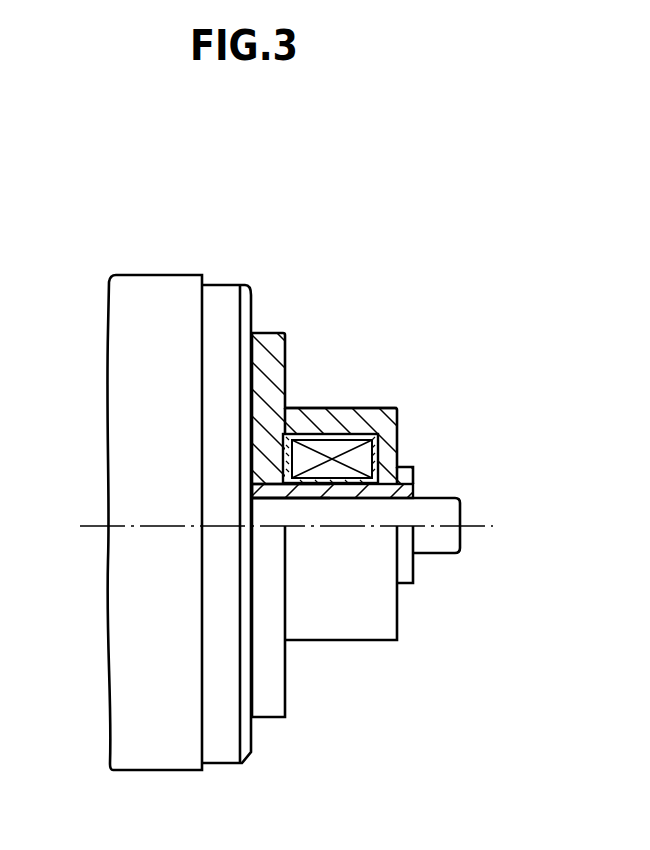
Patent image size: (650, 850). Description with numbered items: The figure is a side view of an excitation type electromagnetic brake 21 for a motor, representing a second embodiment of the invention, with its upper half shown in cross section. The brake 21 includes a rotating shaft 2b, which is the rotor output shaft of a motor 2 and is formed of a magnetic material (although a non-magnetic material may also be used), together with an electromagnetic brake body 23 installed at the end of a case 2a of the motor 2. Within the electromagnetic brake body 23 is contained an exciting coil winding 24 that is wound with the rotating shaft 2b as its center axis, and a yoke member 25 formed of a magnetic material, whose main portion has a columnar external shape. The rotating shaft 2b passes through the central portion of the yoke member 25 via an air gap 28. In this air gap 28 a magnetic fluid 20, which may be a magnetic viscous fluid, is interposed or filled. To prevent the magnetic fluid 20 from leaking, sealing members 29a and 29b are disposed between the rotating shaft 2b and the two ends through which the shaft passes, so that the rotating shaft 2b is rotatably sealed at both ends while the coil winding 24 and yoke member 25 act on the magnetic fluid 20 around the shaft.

The motor 2 is at (103, 370).
The case 2a is at (227, 285).
The rotating shaft 2b is at (450, 538).
The excitation type electromagnetic brake 21 is at (283, 508).
The electromagnetic brake body 23 is at (382, 408).
The exciting coil winding 24 is at (362, 462).
The yoke member 25 is at (343, 417).
The air gap 28 is at (363, 601).
The magnetic fluid 20 is at (347, 493).
The sealing member 29a is at (253, 493).
The sealing member 29b is at (412, 493).